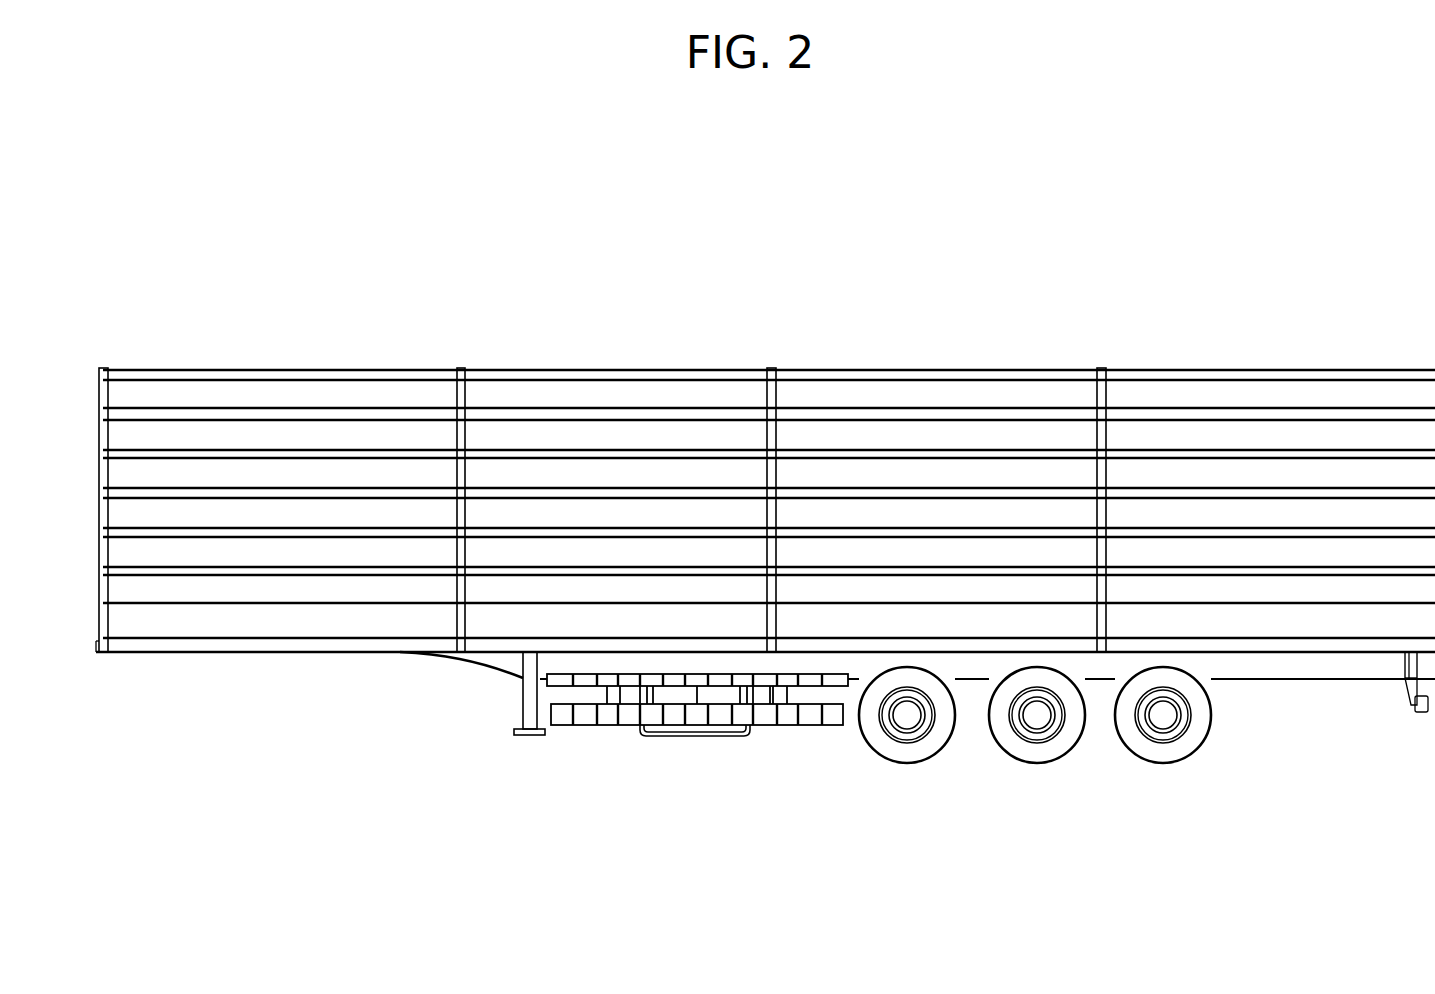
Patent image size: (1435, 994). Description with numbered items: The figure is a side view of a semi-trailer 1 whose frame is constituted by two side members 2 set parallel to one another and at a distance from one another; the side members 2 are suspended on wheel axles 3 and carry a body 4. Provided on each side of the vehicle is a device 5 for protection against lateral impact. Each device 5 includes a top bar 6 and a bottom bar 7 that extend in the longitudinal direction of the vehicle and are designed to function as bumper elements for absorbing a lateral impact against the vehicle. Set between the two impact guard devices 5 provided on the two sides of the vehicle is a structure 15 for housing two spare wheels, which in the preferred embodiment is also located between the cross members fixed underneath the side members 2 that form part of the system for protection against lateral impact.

The semi-trailer 1 is at (938, 313).
The side member 2 is at (1310, 667).
The wheel axle 3 is at (907, 718).
The body 4 is at (405, 552).
The device for protection against lateral impact 5 is at (721, 762).
The top bar 6 is at (552, 692).
The bottom bar 7 is at (610, 716).
The structure for housing two spare wheels 15 is at (720, 698).